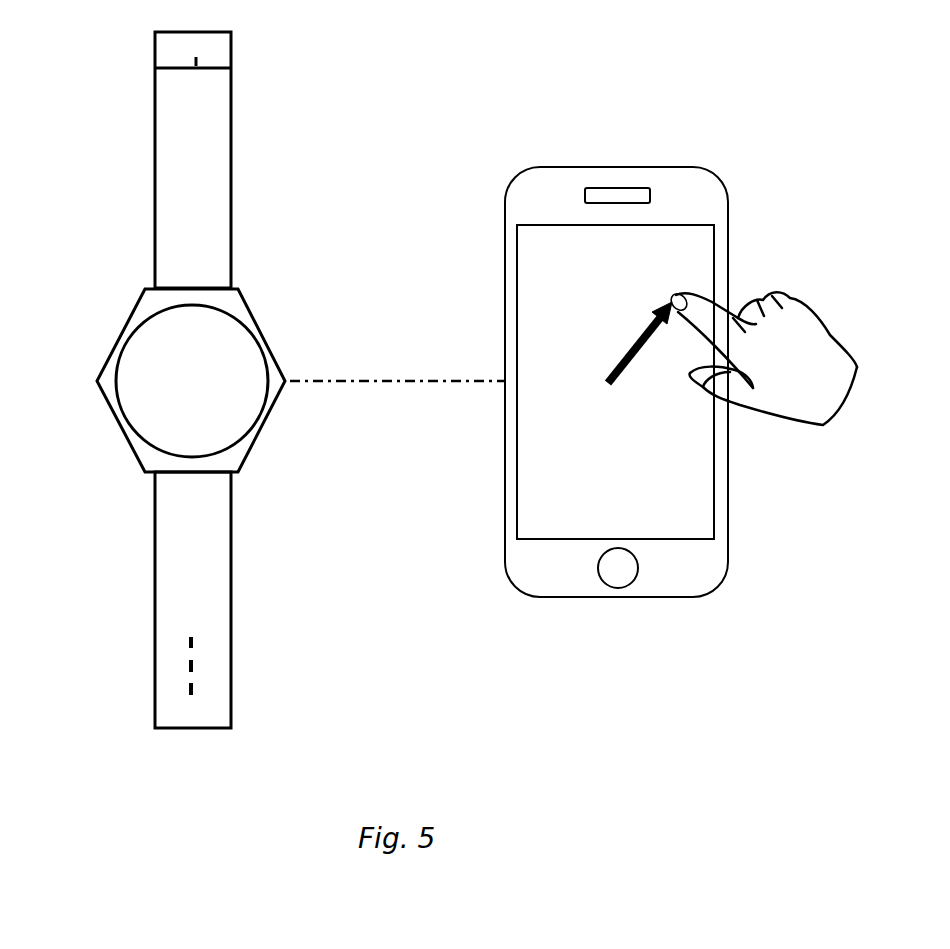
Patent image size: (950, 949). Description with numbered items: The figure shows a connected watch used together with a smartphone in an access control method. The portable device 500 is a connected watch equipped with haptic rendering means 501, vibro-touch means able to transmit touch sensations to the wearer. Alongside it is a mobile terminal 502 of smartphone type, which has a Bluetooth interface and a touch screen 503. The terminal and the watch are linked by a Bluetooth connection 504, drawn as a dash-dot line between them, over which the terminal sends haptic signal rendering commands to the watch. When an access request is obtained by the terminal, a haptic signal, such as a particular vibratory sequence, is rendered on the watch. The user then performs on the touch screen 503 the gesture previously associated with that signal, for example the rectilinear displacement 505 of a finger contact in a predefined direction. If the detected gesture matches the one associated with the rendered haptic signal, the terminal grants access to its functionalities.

The portable device 500 is at (240, 287).
The haptic rendering means 501 is at (142, 348).
The mobile terminal 502 is at (683, 167).
The touch screen 503 is at (698, 267).
The Bluetooth connection 504 is at (335, 381).
The displacement 505 is at (630, 332).